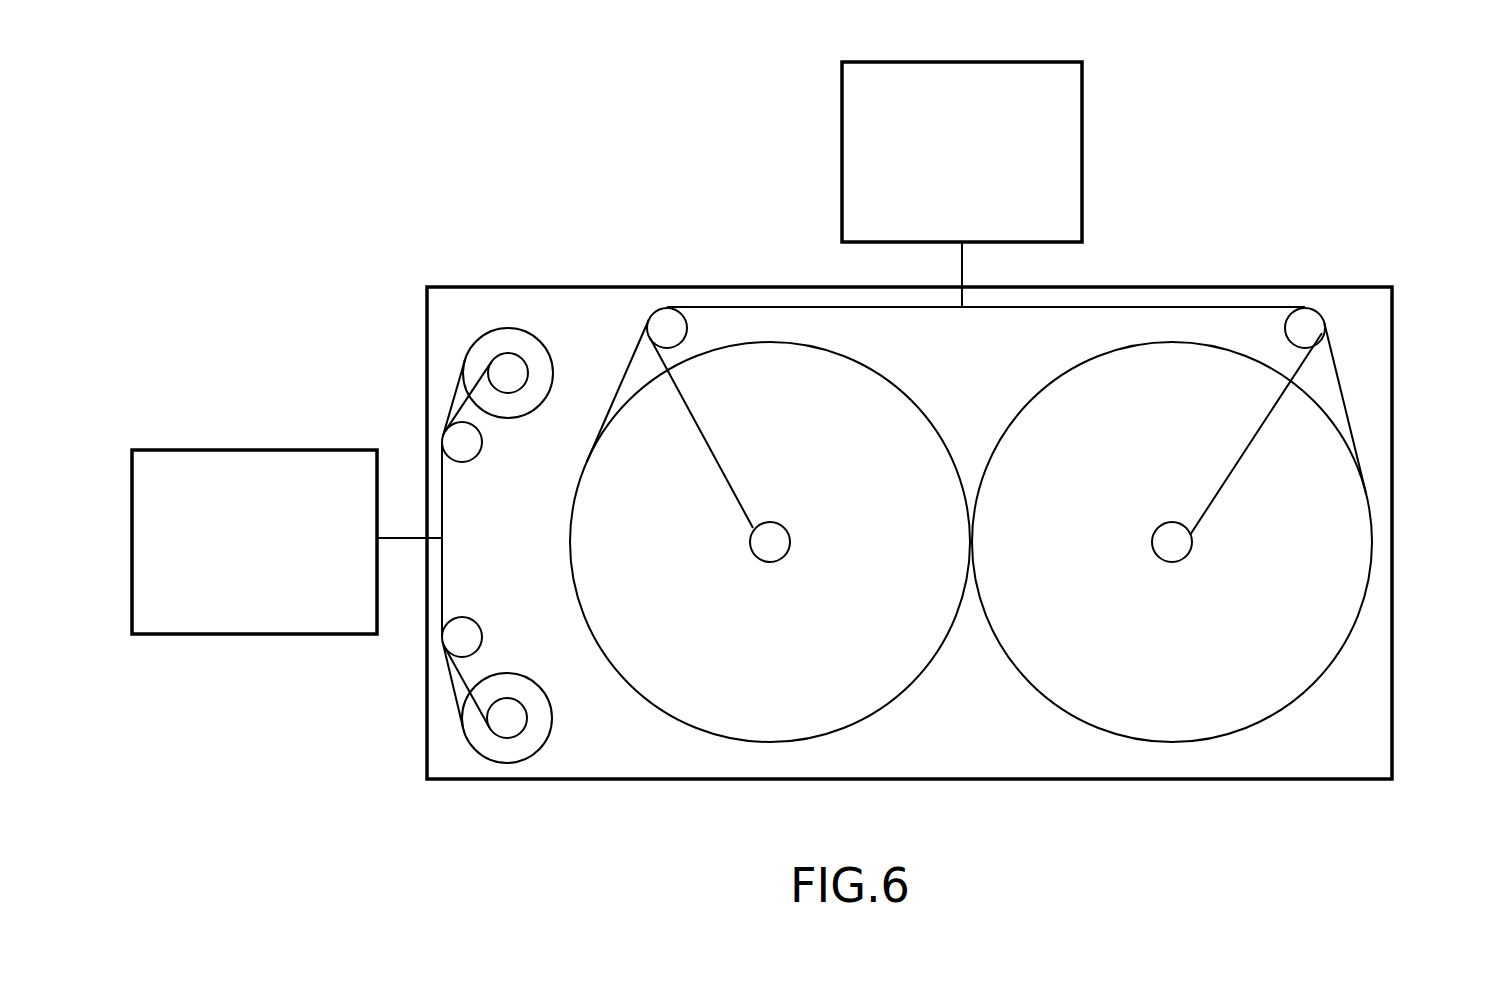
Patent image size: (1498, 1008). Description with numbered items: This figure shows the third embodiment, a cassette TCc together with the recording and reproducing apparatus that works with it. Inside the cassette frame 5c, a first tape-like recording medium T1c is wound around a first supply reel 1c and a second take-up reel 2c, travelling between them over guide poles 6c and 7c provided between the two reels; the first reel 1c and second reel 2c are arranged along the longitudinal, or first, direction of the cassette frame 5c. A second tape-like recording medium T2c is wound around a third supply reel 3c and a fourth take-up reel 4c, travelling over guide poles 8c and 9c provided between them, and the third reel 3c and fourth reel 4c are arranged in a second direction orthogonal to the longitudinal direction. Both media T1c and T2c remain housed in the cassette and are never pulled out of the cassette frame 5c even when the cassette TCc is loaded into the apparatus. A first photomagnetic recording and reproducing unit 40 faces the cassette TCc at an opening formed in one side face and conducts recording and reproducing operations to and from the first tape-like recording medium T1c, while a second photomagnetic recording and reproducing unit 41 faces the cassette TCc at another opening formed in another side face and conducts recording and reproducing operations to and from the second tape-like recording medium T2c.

The first photomagnetic recording and reproducing unit 40 is at (1068, 150).
The second photomagnetic recording and reproducing unit 41 is at (283, 465).
The cassette TCc is at (1410, 508).
The cassette frame 5c is at (1248, 286).
The first supply reel 1c is at (903, 677).
The second take-up reel 2c is at (1037, 673).
The third supply reel 3c is at (542, 718).
The fourth take-up reel 4c is at (523, 403).
The guide pole 6c is at (677, 328).
The guide pole 7c is at (1293, 328).
The guide pole 8c is at (465, 443).
The guide pole 9c is at (472, 633).
The first tape-like recording medium T1c is at (892, 307).
The second tape-like recording medium T2c is at (443, 512).